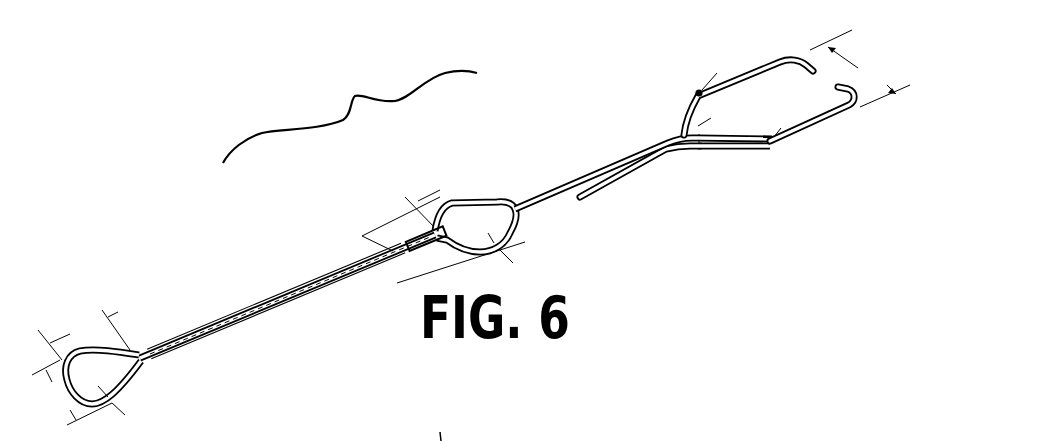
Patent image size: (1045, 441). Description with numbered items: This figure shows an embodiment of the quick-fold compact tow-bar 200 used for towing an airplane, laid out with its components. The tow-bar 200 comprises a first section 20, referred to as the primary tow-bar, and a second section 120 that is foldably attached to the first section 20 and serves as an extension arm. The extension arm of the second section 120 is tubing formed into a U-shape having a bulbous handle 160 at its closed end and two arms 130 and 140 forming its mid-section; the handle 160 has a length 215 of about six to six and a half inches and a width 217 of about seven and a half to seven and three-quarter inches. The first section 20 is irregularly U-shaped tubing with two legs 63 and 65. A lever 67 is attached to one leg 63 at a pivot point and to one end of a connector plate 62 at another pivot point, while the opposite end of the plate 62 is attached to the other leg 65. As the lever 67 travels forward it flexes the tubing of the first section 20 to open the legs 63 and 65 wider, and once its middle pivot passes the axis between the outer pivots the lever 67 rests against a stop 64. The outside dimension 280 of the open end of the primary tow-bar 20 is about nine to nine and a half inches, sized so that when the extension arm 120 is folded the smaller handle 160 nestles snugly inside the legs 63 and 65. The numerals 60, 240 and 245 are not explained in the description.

The quick-fold compact tow-bar 200 is at (330, 93).
The first section 20 is at (548, 162).
The second section 120 is at (335, 242).
The arm 130 is at (290, 303).
The arm 140 is at (241, 308).
The handle 160 is at (128, 382).
The length of handle 215 is at (84, 335).
The width of handle 217 is at (78, 392).
The distal loop 60 is at (513, 228).
The sleeve 245 is at (412, 252).
The sleeve dimension 240 is at (445, 189).
The lever 67 is at (617, 173).
The connector plate 62 is at (740, 147).
The stop 64 is at (724, 135).
The leg 63 is at (784, 79).
The leg 65 is at (842, 92).
The outside dimension of open end 280 is at (860, 68).